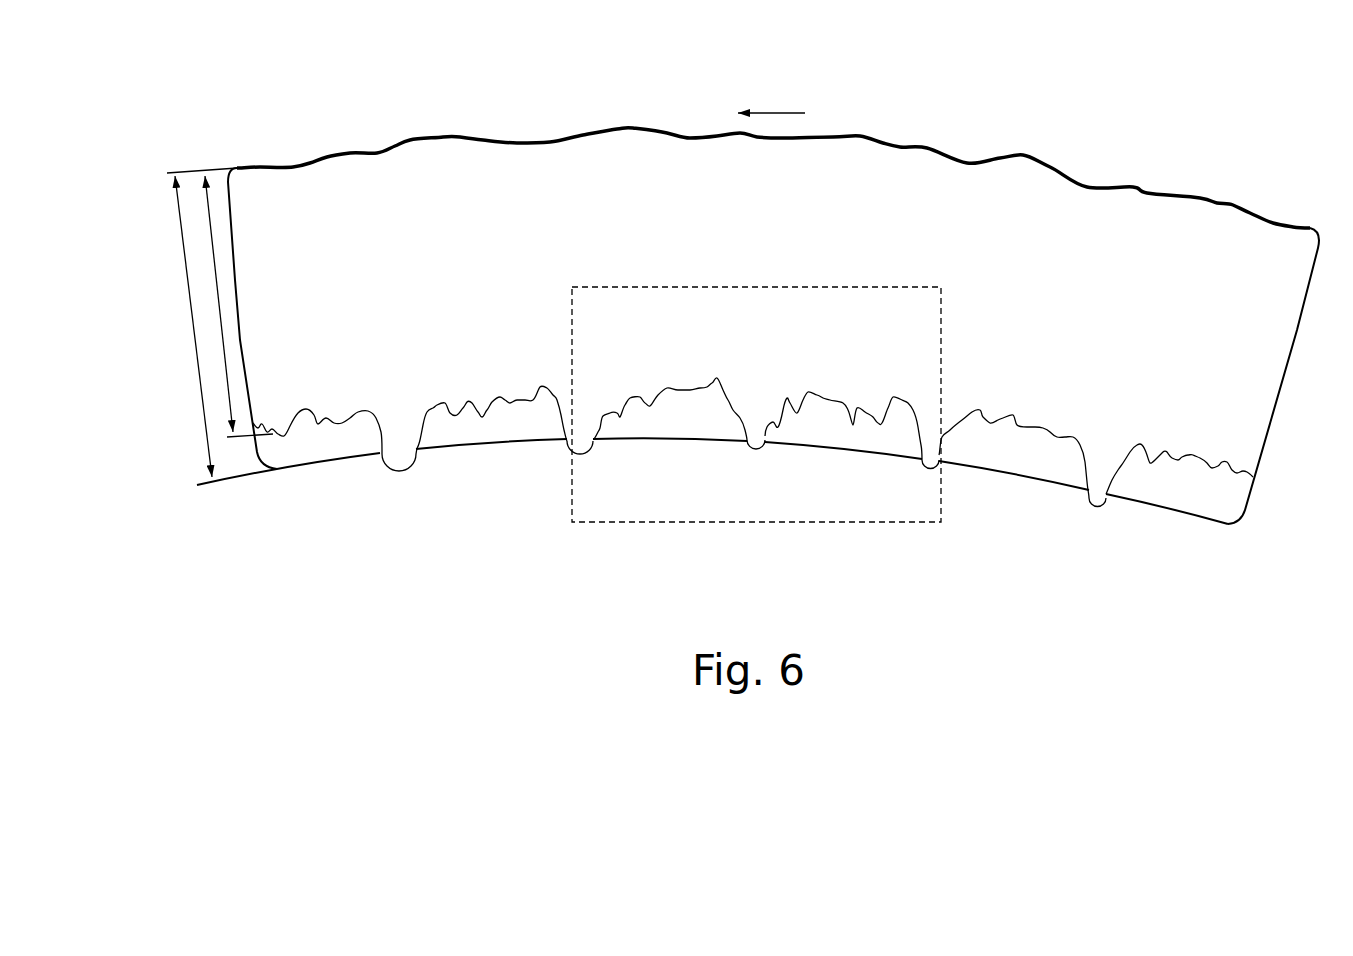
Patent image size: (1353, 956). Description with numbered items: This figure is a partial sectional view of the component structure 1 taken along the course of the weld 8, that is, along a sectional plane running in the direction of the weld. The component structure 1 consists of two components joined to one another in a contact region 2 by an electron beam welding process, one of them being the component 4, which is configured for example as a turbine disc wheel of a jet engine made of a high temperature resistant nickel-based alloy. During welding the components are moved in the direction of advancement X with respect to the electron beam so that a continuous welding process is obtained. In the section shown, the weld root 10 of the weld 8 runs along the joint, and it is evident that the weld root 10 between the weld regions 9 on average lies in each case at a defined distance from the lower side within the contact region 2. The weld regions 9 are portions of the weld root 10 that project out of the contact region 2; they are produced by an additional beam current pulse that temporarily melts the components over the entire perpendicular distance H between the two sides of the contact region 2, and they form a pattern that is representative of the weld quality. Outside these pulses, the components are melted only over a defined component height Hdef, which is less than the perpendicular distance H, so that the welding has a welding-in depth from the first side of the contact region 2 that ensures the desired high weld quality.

The component structure 1 is at (734, 287).
The contact region 2 is at (238, 308).
The component 4 is at (1230, 437).
The weld 8 is at (1025, 190).
The weld regions 9 is at (400, 480).
The weld root 10 is at (485, 434).
The direction of advancement X is at (787, 113).
The perpendicular distance H is at (186, 267).
The defined component height Hdef is at (210, 229).